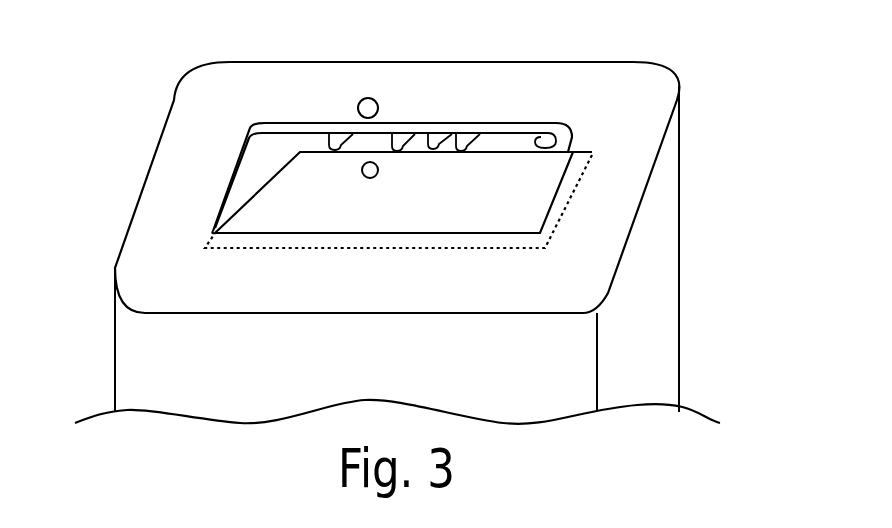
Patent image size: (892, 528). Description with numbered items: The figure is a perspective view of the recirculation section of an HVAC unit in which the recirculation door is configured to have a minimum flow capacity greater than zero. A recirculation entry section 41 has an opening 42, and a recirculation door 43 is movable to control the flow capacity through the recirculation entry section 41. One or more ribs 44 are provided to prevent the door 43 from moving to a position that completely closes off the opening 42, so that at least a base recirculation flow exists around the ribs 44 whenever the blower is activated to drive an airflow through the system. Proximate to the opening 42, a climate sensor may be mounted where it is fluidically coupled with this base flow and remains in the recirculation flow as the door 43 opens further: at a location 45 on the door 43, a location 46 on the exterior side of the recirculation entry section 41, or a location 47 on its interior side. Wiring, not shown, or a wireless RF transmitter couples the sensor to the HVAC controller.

The recirculation entry section 41 is at (183, 157).
The opening 42 is at (537, 142).
The recirculation door 43 is at (493, 182).
The ribs 44 is at (333, 140).
The location on door 45 is at (370, 170).
The location on exterior side of recirculation entry section 46 is at (369, 98).
The location on interior side of recirculation entry section 47 is at (433, 140).